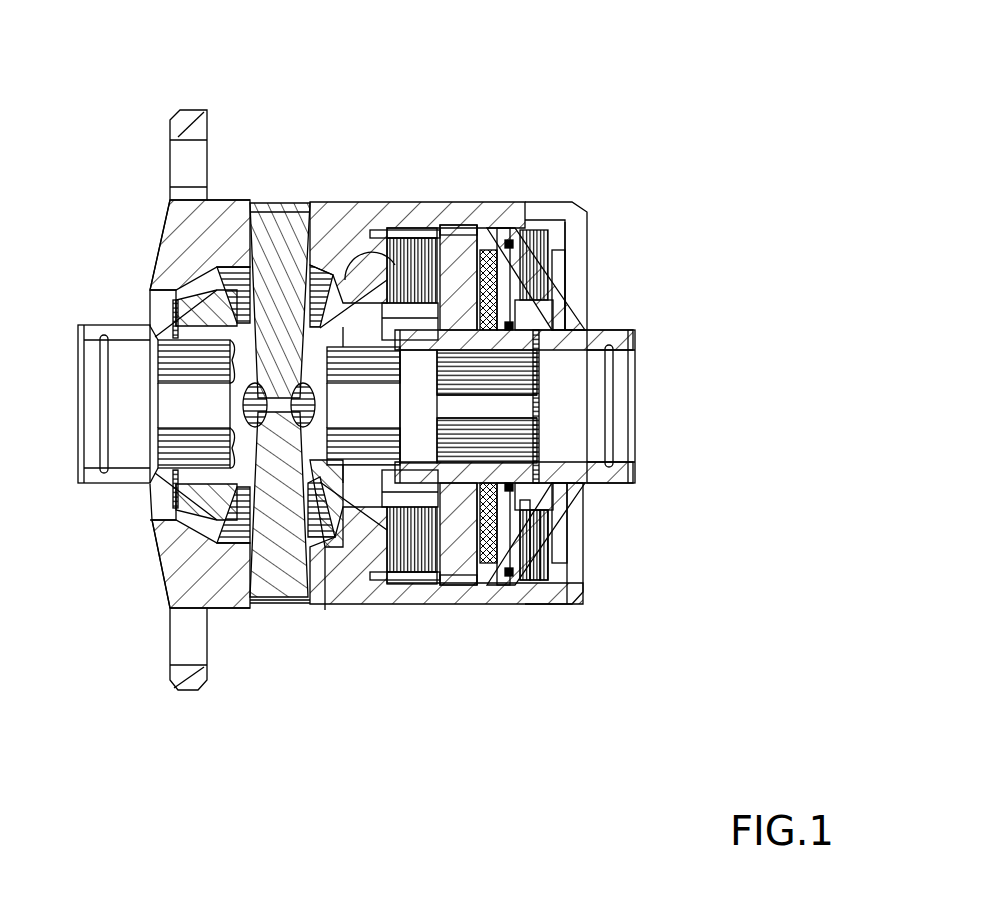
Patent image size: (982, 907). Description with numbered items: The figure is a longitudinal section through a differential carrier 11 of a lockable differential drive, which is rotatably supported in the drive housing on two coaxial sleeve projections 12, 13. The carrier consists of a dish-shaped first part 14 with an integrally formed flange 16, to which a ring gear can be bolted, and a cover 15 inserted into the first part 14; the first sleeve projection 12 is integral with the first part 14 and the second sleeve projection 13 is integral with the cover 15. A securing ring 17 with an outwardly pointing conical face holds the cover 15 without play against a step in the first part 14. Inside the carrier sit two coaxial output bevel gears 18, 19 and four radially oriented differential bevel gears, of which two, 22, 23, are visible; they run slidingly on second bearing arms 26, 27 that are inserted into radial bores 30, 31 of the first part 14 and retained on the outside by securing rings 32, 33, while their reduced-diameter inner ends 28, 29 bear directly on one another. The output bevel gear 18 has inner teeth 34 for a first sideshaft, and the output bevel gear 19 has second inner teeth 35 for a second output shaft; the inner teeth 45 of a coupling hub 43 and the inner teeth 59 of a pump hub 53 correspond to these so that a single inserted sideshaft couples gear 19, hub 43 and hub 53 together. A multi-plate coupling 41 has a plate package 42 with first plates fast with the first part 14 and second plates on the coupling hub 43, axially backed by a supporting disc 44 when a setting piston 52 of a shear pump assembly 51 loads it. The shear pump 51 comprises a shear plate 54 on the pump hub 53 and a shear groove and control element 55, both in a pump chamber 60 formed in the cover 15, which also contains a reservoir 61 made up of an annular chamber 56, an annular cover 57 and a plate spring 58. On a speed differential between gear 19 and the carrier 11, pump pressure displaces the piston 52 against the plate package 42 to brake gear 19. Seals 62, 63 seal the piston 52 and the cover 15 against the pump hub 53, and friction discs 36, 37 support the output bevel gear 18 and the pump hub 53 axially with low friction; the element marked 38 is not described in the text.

The differential carrier 11 is at (422, 108).
The first sleeve projection 12 is at (95, 324).
The second sleeve projection 13 is at (607, 330).
The dish-shaped first part 14 is at (230, 200).
The cover 15 is at (512, 232).
The flange 16 is at (200, 122).
The securing ring 17 is at (587, 213).
The output bevel gear 18 is at (197, 323).
The output bevel gear 19 is at (383, 240).
The differential bevel gear 22 is at (332, 250).
The differential bevel gear 23 is at (325, 545).
The second bearing arm 26 is at (293, 217).
The second bearing arm 27 is at (273, 573).
The inner end 28 is at (233, 325).
The inner end 29 is at (233, 485).
The radial bore 30 is at (225, 248).
The radial bore 31 is at (250, 613).
The securing ring 32 is at (318, 255).
The securing ring 33 is at (294, 605).
The inner teeth 34 is at (187, 353).
The second inner teeth 35 is at (517, 370).
The friction disc 36 is at (172, 486).
The friction disc 37 is at (577, 490).
The thrust washer 38 is at (321, 401).
The multi-plate coupling 41 is at (437, 193).
The plate package 42 is at (412, 303).
The coupling hub 43 is at (489, 250).
The supporting disc 44 is at (432, 228).
The inner teeth 45 is at (423, 407).
The shear pump assembly 51 is at (500, 590).
The setting piston 52 is at (457, 545).
The pump hub 53 is at (440, 547).
The shear plate 54 is at (472, 540).
The shear groove and control element 55 is at (492, 540).
The annular chamber 56 is at (533, 548).
The annular cover 57 is at (556, 565).
The plate spring 58 is at (550, 540).
The inner teeth 59 is at (510, 437).
The pump chamber 60 is at (492, 560).
The reservoir 61 is at (575, 540).
The seal 62 is at (520, 278).
The seal 63 is at (515, 330).